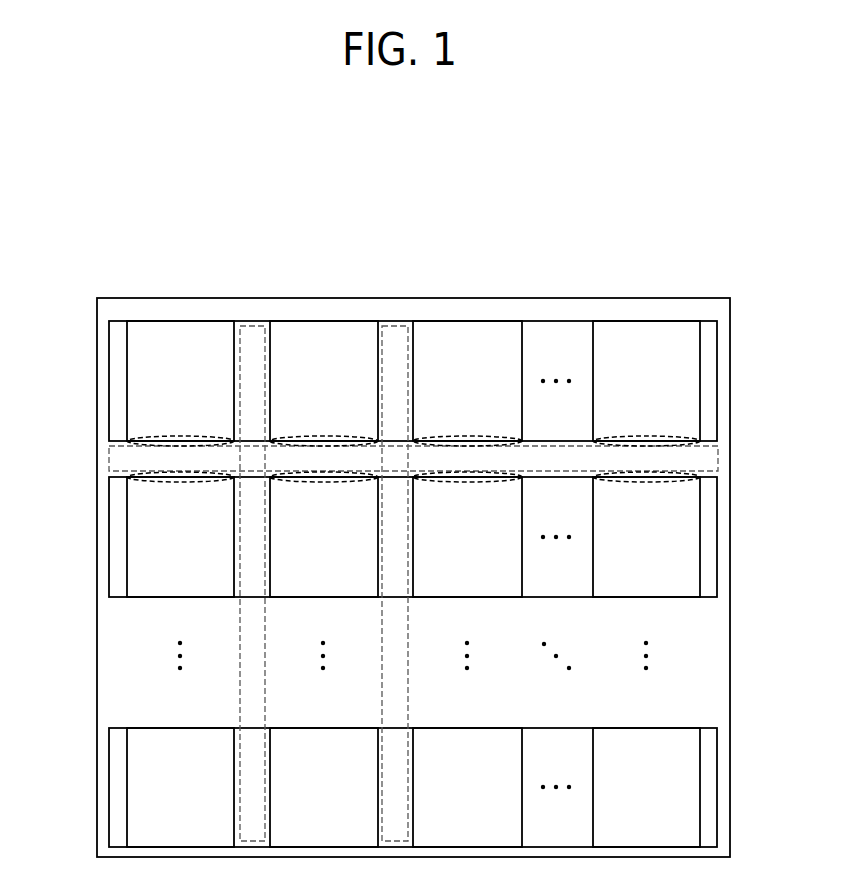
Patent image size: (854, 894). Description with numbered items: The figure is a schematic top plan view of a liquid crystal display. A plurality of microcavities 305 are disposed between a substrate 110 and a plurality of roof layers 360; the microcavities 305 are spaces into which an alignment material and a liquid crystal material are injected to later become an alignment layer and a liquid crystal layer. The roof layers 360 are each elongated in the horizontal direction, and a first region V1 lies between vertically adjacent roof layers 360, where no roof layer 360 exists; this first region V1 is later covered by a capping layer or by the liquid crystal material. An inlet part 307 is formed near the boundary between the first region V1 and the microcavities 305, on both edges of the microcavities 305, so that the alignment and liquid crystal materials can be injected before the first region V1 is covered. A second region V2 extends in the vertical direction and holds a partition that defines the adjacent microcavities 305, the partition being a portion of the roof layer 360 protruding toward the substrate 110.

The substrate 110 is at (487, 298).
The microcavity 305 is at (172, 374).
The roof layer 360 is at (109, 390).
The inlet part 307 is at (152, 481).
The first region V1 is at (109, 458).
The second region V2 is at (252, 326).